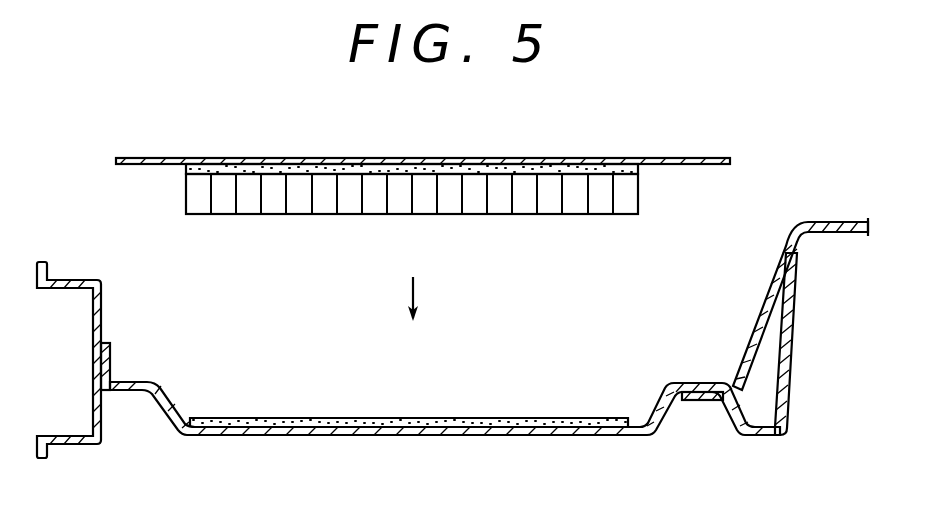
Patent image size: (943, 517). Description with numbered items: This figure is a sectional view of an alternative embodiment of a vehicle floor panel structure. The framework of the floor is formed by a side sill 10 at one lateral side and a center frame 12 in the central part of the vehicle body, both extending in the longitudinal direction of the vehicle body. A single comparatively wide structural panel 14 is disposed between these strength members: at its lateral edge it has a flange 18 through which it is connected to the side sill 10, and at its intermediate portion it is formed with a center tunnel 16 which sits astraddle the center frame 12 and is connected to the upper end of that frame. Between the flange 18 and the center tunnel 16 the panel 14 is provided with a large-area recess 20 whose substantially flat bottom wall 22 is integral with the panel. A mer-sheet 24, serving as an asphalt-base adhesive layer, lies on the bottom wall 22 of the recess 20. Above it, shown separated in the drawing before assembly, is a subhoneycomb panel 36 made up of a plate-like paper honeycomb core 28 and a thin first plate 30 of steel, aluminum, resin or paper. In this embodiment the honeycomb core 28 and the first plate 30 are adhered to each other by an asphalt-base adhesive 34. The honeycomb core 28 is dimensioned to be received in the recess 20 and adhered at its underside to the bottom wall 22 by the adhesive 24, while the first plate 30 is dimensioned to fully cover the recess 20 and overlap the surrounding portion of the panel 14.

The side sill 10 is at (105, 289).
The center frame 12 is at (772, 437).
The structural panel 14 is at (754, 324).
The center tunnel 16 is at (848, 236).
The flange 18 is at (113, 352).
The recess 20 is at (445, 423).
The flat bottom wall 22 is at (362, 440).
The mer-sheet 24 is at (474, 418).
The honeycomb core 28 is at (471, 216).
The first plate 30 is at (665, 157).
The asphalt-base adhesive 34 is at (481, 165).
The subhoneycomb panel 36 is at (423, 169).